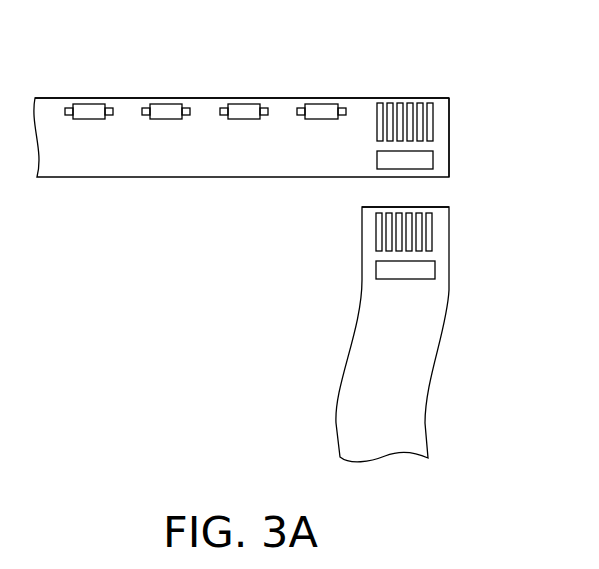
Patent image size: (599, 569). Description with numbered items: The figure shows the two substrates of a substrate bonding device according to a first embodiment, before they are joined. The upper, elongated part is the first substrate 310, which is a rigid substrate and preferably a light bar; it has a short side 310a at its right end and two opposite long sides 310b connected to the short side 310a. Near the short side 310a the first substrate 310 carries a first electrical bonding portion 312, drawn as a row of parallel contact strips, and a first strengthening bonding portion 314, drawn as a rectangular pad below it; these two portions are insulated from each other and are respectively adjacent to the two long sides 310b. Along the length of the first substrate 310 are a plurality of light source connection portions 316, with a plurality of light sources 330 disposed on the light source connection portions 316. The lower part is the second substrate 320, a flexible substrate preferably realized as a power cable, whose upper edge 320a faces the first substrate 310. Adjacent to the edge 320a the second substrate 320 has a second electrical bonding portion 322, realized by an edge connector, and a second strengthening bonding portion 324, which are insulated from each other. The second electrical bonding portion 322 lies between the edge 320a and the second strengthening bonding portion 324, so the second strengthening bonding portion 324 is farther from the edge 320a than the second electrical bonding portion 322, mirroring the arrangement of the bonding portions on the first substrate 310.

The first substrate 310 is at (161, 183).
The short side 310a is at (449, 116).
The long sides 310b is at (123, 98).
The first electrical bonding portion 312 is at (399, 103).
The first strengthening bonding portion 314 is at (430, 158).
The light source connection portions 316 is at (266, 107).
The second substrate 320 is at (323, 342).
The edge 320a is at (362, 207).
The second electrical bonding portion 322 is at (435, 232).
The second strengthening bonding portion 324 is at (435, 268).
The light sources 330 is at (237, 103).